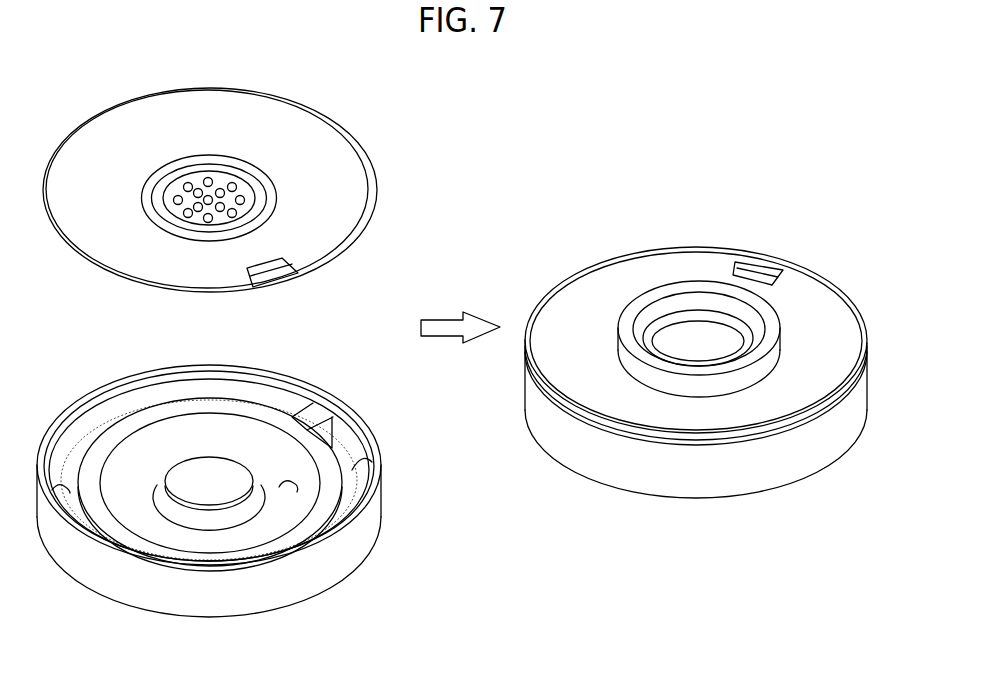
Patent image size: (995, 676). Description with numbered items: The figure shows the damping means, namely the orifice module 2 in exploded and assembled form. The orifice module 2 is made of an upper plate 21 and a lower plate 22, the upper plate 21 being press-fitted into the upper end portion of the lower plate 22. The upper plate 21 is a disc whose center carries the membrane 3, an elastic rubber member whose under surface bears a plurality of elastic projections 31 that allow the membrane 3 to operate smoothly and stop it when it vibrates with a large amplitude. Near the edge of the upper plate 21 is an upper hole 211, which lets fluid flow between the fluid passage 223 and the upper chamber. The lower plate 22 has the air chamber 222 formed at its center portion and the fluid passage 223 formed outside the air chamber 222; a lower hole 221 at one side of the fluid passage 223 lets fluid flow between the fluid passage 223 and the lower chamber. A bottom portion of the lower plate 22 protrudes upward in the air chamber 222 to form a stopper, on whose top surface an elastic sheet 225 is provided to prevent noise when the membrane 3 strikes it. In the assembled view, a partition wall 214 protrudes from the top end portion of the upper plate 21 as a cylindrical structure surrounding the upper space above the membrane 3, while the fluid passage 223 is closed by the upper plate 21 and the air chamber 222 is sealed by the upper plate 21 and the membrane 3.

The orifice module 2 is at (659, 240).
The upper plate 21 is at (336, 110).
The lower plate 22 is at (321, 382).
The membrane 3 is at (276, 186).
The elastic projections 31 is at (243, 203).
The upper hole 211 is at (284, 273).
The partition wall 214 is at (717, 380).
The lower hole 221 is at (352, 458).
The air chamber 222 is at (288, 492).
The fluid passage 223 is at (63, 494).
The elastic sheet 225 is at (212, 490).